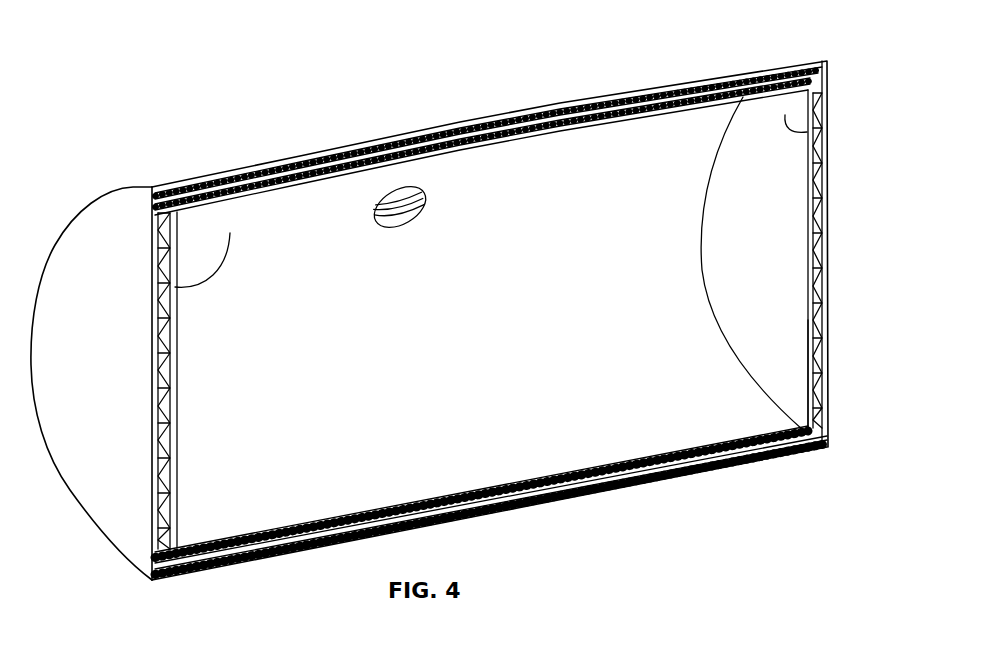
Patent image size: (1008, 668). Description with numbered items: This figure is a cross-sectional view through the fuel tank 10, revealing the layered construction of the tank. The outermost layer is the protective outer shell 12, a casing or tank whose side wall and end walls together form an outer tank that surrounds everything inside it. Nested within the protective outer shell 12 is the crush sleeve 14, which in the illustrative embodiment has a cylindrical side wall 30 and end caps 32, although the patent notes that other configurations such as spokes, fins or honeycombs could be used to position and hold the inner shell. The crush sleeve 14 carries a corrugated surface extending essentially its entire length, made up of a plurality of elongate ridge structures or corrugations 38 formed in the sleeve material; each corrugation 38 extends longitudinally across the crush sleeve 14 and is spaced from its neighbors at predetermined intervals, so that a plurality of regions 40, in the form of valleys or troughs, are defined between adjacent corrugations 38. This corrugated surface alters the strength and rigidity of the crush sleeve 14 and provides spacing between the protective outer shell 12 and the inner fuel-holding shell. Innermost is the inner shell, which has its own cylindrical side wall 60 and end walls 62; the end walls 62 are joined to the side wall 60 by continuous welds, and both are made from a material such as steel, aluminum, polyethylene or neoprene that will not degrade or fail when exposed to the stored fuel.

The fuel tank 10 is at (497, 69).
The protective outer shell 12 is at (718, 80).
The crush sleeve 14 is at (313, 175).
The cylindrical side wall 30 is at (648, 468).
The end caps 32 is at (818, 282).
The corrugations 38 is at (823, 216).
The regions 40 is at (803, 330).
The cylindrical side wall 60 is at (438, 498).
The end walls 62 is at (230, 233).